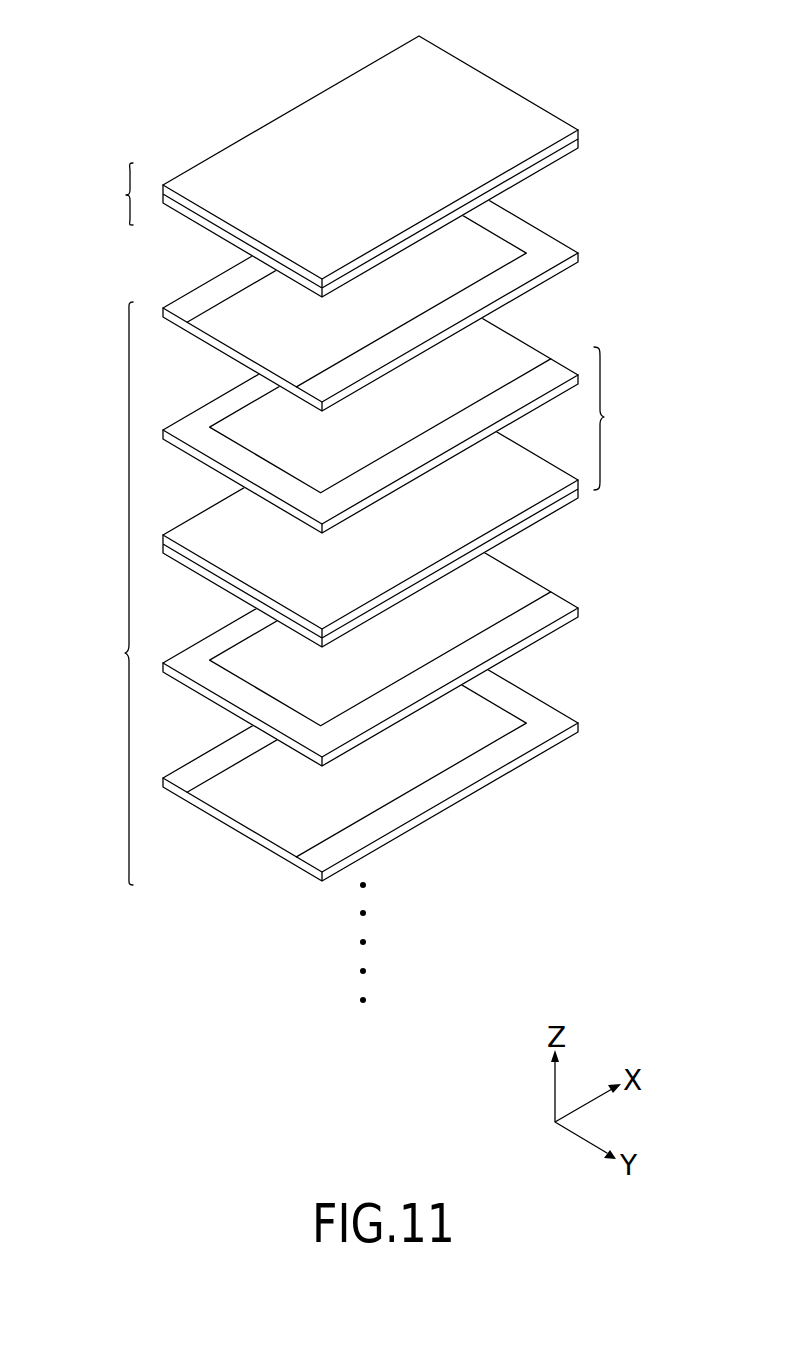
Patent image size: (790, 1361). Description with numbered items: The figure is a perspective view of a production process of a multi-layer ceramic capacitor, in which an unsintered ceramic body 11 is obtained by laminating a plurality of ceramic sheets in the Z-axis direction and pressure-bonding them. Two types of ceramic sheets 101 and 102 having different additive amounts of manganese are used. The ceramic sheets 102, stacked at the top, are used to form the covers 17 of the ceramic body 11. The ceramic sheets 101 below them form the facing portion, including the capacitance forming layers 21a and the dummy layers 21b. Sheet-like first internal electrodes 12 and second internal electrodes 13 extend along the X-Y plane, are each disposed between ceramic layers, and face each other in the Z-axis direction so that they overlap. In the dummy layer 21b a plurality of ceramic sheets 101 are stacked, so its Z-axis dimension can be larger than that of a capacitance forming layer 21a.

The ceramic body 11 is at (217, 68).
The first internal electrode 12 is at (232, 318).
The second internal electrode 13 is at (242, 423).
The cover 17 is at (580, 111).
The capacitance forming layer 21a is at (580, 254).
The dummy layer 21b is at (408, 464).
The ceramic sheet 101 is at (102, 593).
The ceramic sheet 102 is at (102, 194).